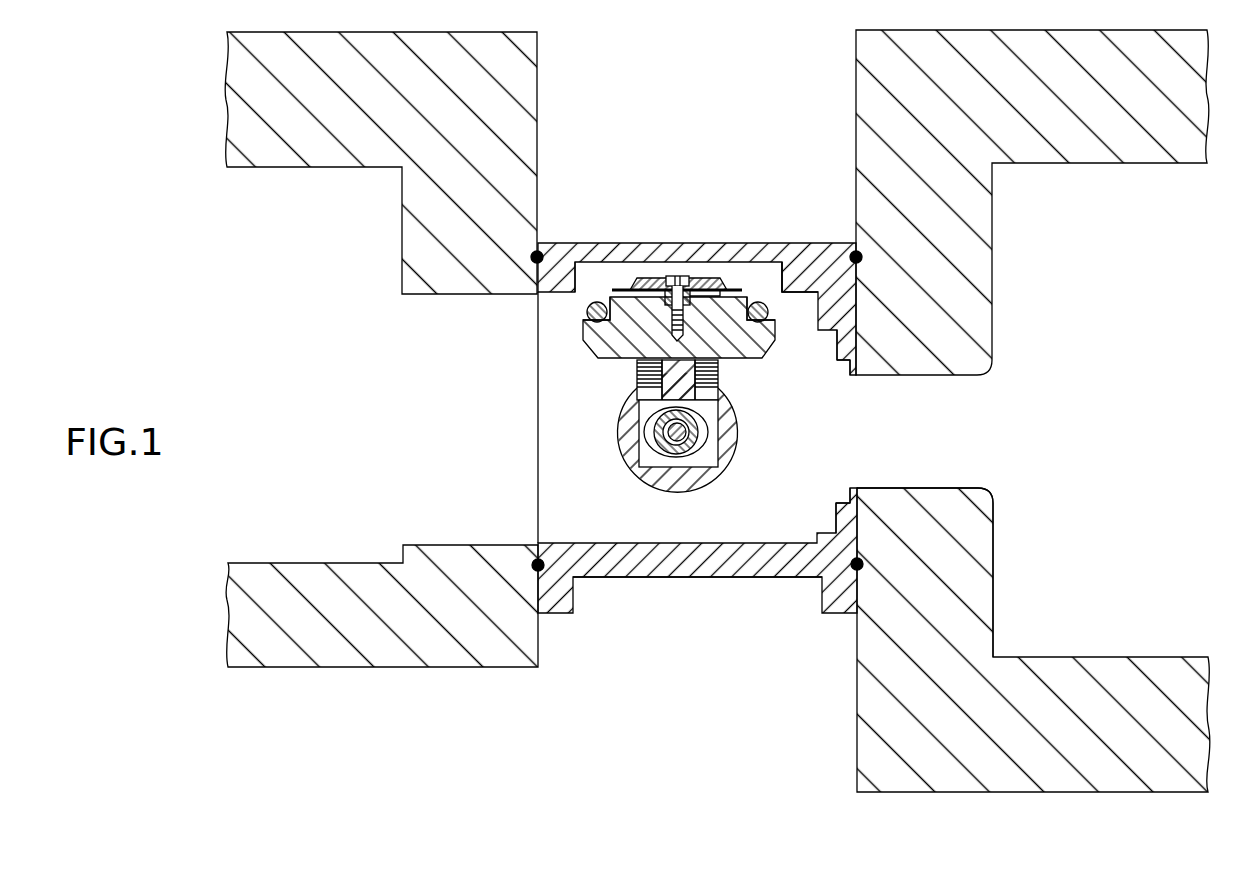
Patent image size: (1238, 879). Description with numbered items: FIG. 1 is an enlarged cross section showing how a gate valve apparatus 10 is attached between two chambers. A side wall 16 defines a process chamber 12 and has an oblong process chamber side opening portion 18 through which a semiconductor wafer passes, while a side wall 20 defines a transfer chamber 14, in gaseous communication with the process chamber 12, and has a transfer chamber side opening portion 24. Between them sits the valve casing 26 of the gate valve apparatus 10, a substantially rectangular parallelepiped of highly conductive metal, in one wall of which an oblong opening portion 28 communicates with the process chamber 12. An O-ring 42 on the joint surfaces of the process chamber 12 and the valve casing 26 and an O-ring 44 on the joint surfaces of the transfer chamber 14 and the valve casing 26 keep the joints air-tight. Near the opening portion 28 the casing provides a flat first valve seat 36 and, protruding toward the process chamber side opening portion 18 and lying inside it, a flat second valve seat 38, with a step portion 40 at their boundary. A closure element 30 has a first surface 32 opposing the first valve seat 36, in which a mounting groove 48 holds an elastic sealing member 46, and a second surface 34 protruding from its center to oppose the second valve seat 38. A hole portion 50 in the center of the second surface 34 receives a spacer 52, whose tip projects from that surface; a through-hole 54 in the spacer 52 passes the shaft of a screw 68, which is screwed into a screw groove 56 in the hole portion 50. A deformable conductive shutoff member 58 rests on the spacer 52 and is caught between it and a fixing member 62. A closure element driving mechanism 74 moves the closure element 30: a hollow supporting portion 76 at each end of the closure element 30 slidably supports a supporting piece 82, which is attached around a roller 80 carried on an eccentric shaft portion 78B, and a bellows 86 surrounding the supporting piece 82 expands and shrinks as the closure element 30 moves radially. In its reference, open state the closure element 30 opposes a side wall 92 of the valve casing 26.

The gate valve apparatus 10 is at (653, 580).
The process chamber 12 is at (940, 795).
The transfer chamber 14 is at (400, 668).
The side wall 16 is at (975, 597).
The process chamber side opening portion 18 is at (1012, 435).
The side wall 20 is at (415, 260).
The transfer chamber side opening portion 24 is at (615, 447).
The valve casing 26 is at (748, 578).
The opening portion 28 is at (895, 389).
The closure element 30 is at (585, 333).
The first surface 32 is at (610, 297).
The second surface 34 is at (716, 289).
The first valve seat 36 is at (837, 350).
The second valve seat 38 is at (850, 368).
The step portion 40 is at (840, 365).
The O-ring 42 is at (857, 564).
The O-ring 44 is at (538, 564).
The sealing member 46 is at (590, 308).
The mounting groove 48 is at (586, 302).
The hole portion 50 is at (618, 264).
The spacer 52 is at (688, 298).
The through-hole 54 is at (680, 330).
The screw groove 56 is at (640, 445).
The shutoff member 58 is at (632, 290).
The fixing member 62 is at (722, 290).
The screw 68 is at (675, 297).
The closure element driving mechanism 74 is at (683, 519).
The supporting portion 76 is at (650, 486).
The eccentric shaft portion 78B is at (636, 468).
The roller 80 is at (700, 486).
The supporting piece 82 is at (710, 486).
The bellows 86 is at (640, 378).
The side wall 92 is at (790, 262).